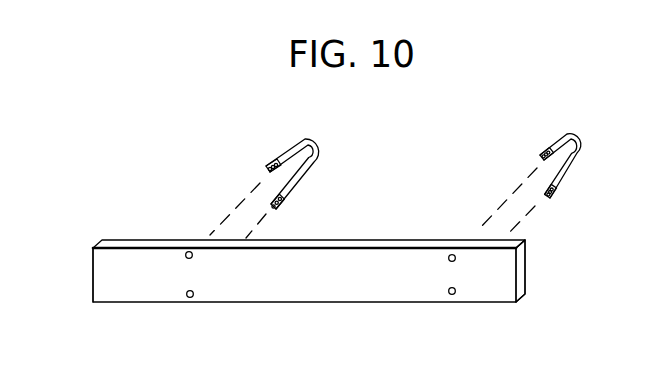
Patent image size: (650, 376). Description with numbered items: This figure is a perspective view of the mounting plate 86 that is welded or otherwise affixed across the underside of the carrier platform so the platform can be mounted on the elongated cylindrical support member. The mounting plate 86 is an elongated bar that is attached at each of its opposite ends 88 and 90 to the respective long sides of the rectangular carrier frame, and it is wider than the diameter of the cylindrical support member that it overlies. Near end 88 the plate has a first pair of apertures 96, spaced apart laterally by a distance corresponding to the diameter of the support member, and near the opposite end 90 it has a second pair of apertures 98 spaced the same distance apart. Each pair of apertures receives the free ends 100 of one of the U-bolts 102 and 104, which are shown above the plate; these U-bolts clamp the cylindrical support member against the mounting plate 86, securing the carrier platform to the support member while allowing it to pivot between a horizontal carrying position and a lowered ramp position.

The mounting plate 86 is at (338, 303).
The end of mounting plate 88 is at (93, 264).
The opposite end of mounting plate 90 is at (517, 275).
The first pair of apertures 96 is at (187, 259).
The second pair of apertures 98 is at (450, 262).
The free ends of U-bolts 100 is at (268, 213).
The U-bolt 102 is at (310, 141).
The U-bolt 104 is at (573, 137).